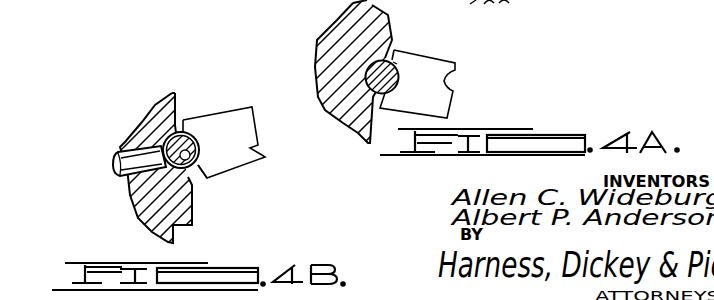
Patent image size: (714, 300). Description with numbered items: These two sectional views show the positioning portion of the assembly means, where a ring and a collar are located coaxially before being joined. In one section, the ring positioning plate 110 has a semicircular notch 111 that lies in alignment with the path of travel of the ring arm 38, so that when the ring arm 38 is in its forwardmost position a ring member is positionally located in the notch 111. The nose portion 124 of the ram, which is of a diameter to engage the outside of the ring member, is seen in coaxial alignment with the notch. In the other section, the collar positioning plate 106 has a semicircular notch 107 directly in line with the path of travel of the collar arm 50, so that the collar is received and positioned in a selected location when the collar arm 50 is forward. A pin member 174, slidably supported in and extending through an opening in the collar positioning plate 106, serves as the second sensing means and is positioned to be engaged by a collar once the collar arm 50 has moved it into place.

In FIG. 4B, the collar positioning plate 106 is at (137, 127).
In FIG. 4B, the pin member 174 is at (120, 158).
In FIG. 4B, the nose portion 124 is at (190, 133).
In FIG. 4A, the nose portion 124 is at (397, 65).
In FIG. 4B, the semicircular notch 107 is at (195, 167).
In FIG. 4B, the collar arm 50 is at (253, 148).
In FIG. 4A, the ring positioning plate 110 is at (338, 25).
In FIG. 4A, the semicircular notch 111 is at (366, 70).
In FIG. 4A, the ring arm 38 is at (455, 80).